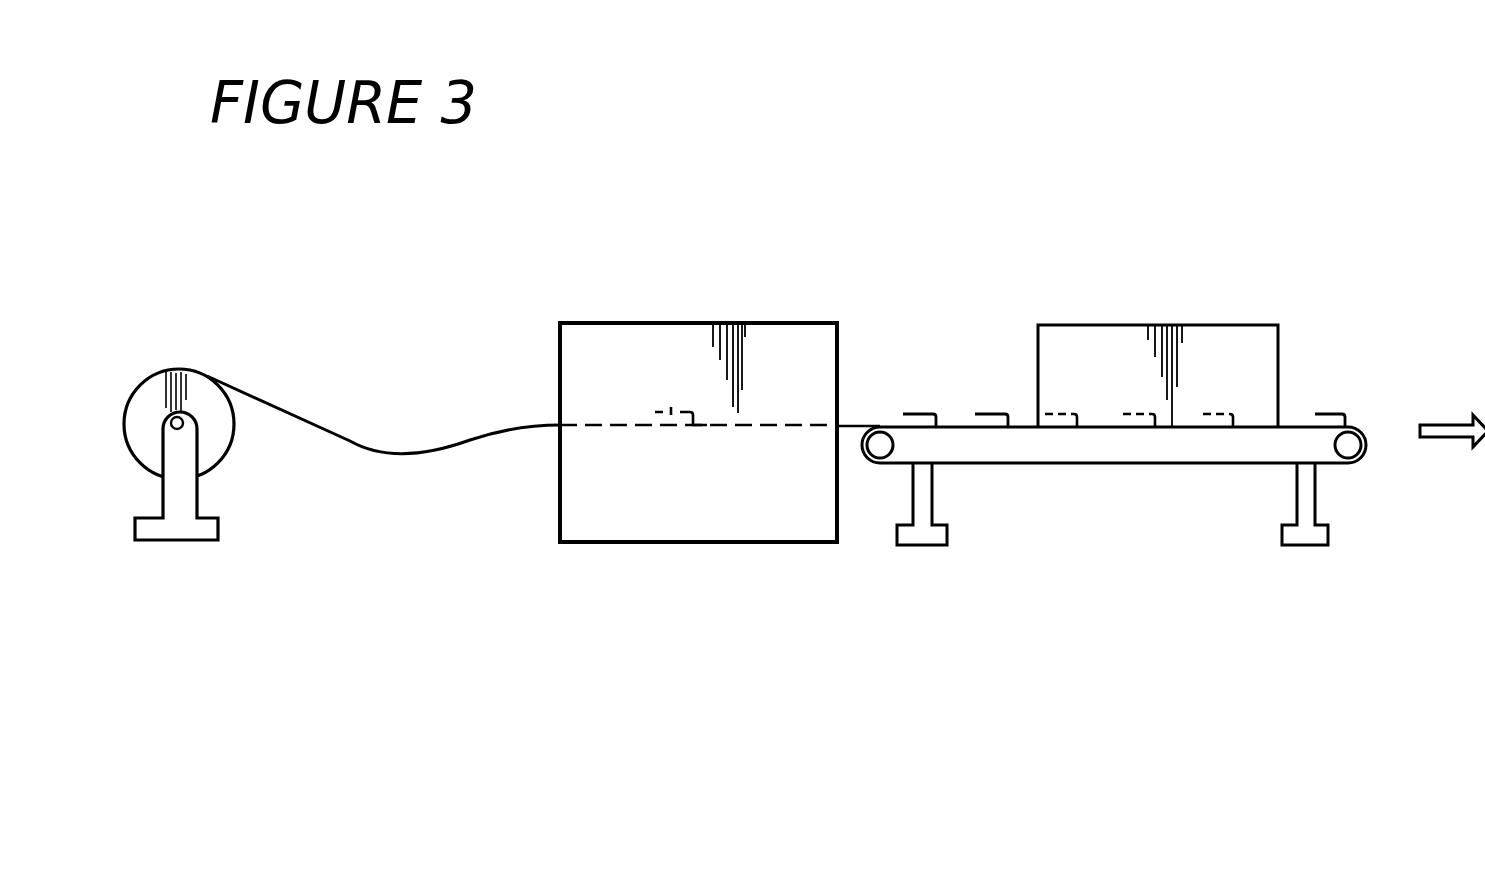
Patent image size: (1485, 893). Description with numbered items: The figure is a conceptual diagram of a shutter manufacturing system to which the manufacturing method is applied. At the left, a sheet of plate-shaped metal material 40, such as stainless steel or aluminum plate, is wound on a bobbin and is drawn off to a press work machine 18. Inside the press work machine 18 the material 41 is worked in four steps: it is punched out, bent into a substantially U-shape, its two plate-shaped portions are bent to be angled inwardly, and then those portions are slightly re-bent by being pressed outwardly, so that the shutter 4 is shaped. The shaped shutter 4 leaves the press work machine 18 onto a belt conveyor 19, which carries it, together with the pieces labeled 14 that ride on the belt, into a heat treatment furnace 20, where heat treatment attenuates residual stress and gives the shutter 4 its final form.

The plate-shaped metal material 40 is at (180, 370).
The material 41 is at (671, 407).
The press work machine 18 is at (790, 323).
The workpieces 14 is at (980, 414).
The heat treatment furnace 20 is at (1170, 325).
The belt conveyor 19 is at (1117, 447).
The shutter 4 is at (1330, 414).